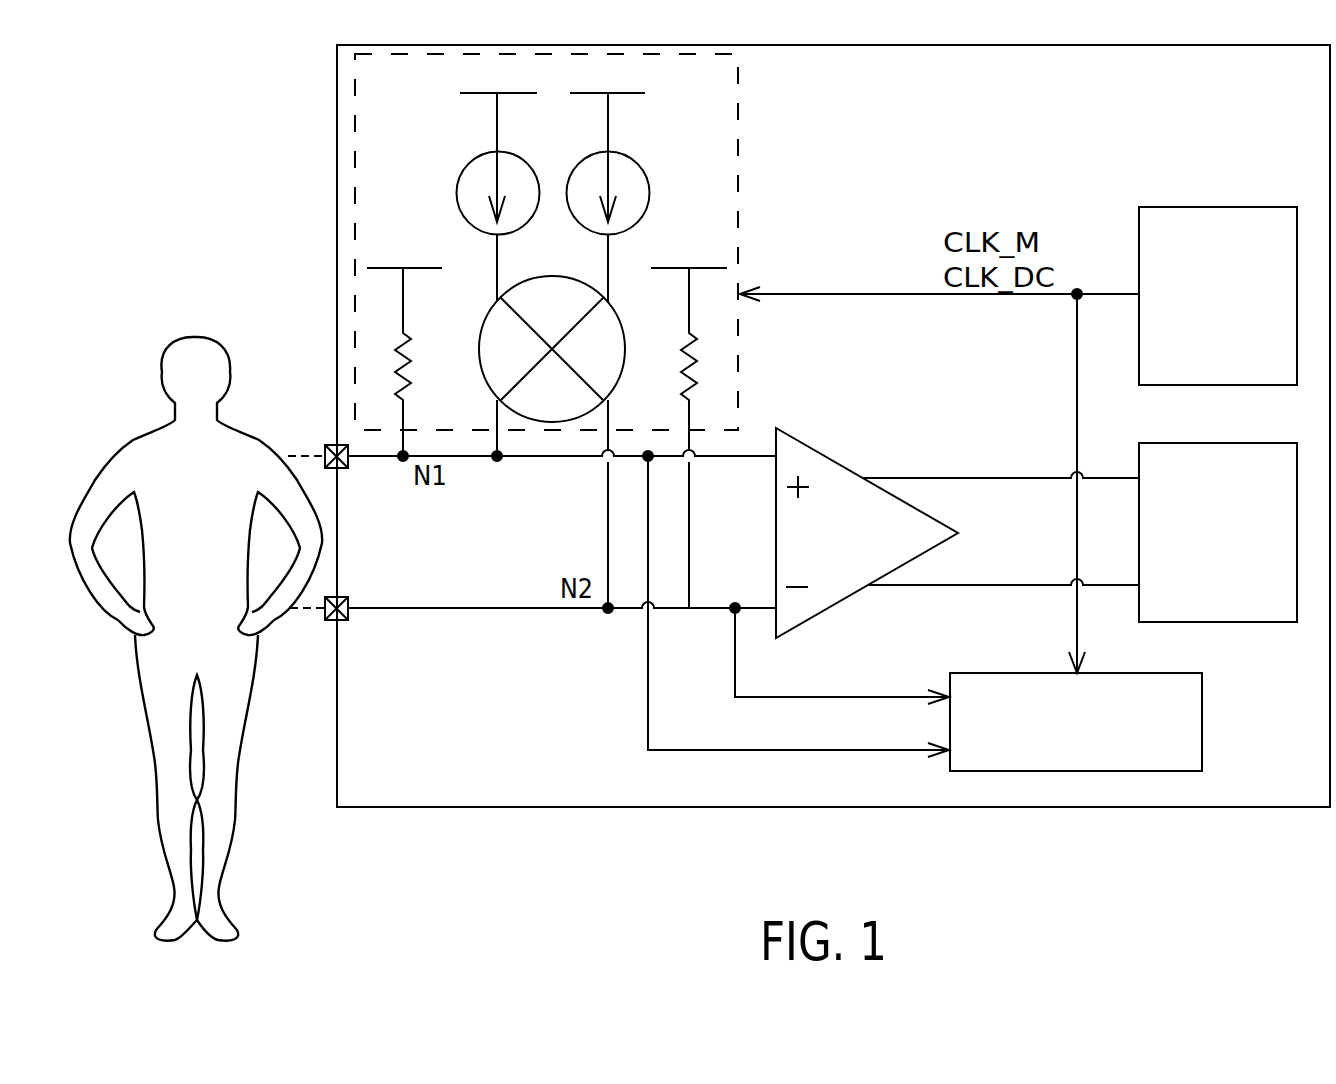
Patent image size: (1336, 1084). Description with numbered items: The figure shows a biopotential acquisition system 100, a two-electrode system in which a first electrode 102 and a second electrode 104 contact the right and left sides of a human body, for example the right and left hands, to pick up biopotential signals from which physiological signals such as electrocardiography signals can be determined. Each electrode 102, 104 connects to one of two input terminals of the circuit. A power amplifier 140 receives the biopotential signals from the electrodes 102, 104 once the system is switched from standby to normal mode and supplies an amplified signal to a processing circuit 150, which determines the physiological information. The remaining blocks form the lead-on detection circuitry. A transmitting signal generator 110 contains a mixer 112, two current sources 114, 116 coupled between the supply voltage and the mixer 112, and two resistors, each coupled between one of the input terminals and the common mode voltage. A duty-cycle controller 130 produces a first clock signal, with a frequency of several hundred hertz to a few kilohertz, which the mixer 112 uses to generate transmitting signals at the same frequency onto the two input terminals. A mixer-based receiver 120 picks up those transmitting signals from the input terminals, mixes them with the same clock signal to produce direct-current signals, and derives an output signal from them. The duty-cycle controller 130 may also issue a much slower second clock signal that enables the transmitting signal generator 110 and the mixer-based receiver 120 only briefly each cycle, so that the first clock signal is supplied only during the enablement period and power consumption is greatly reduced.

The biopotential acquisition system 100 is at (1263, 807).
The electrode 102 is at (343, 470).
The electrode 104 is at (343, 622).
The transmitting signal generator 110 is at (738, 134).
The mixer 112 is at (483, 326).
The current source 114 is at (469, 164).
The current source 116 is at (637, 164).
The mixer-based receiver 120 is at (1157, 673).
The duty-cycle controller 130 is at (1235, 207).
The power amplifier 140 is at (826, 456).
The processing circuit 150 is at (1235, 443).